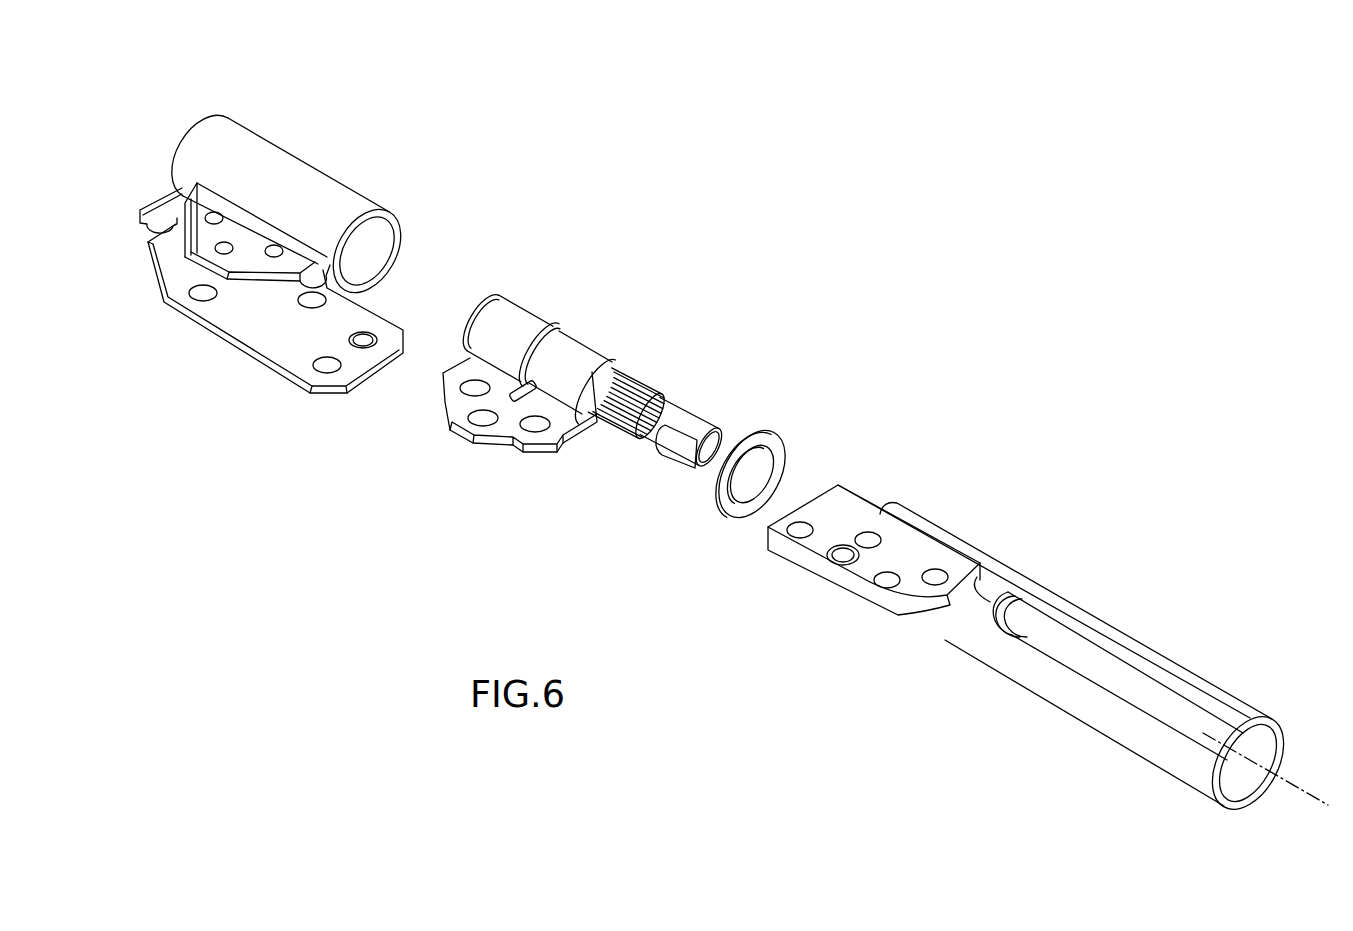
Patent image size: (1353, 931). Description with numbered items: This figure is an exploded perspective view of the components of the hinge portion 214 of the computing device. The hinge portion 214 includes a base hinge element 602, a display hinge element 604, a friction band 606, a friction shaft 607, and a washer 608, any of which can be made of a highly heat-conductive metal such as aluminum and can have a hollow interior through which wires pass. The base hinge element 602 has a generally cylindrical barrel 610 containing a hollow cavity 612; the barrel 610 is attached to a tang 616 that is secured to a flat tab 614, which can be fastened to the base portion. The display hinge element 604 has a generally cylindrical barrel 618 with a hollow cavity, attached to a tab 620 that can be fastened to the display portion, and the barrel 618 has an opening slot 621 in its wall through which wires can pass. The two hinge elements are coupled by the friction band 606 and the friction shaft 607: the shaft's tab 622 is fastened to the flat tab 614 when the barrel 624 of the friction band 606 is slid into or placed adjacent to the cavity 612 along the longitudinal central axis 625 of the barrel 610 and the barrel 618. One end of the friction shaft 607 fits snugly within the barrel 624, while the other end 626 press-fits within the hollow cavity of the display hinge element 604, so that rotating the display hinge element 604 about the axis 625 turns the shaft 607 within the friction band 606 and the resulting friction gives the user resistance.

The hinge portion 214 is at (839, 246).
The base hinge element 602 is at (195, 140).
The display hinge element 604 is at (1223, 690).
The friction band 606 is at (523, 298).
The friction shaft 607 is at (695, 405).
The washer 608 is at (785, 445).
The cylindrical barrel 610 is at (305, 170).
The hollow cavity 612 is at (372, 246).
The flat tab 614 is at (265, 332).
The tang 616 is at (210, 232).
The cylindrical barrel 618 is at (1042, 688).
The tab 620 is at (852, 580).
The opening slot 621 is at (1123, 684).
The tab 622 is at (473, 443).
The barrel 624 is at (535, 322).
The longitudinal central axis 625 is at (1303, 793).
The end 626 is at (682, 447).